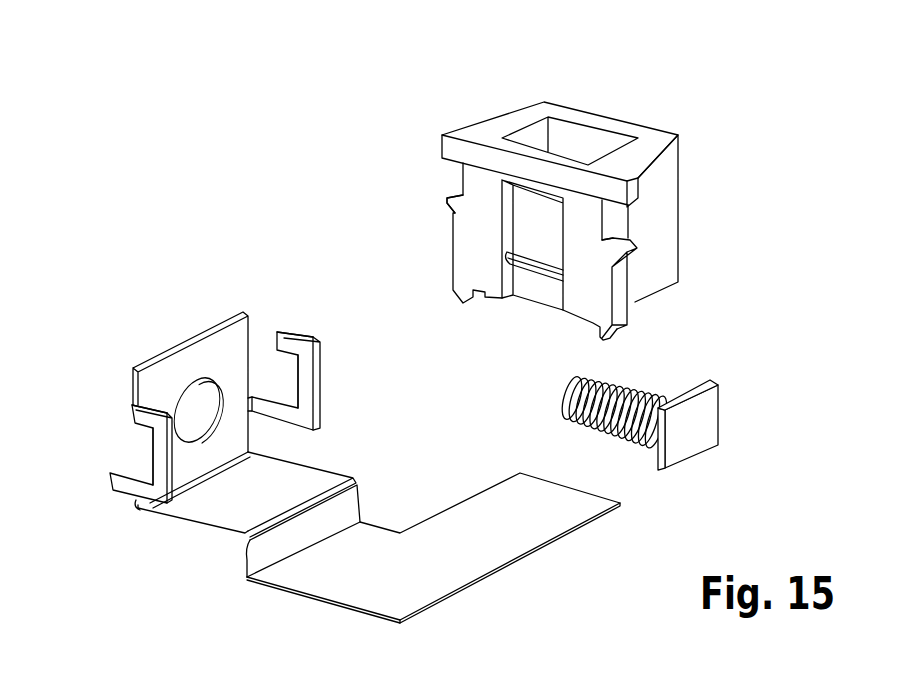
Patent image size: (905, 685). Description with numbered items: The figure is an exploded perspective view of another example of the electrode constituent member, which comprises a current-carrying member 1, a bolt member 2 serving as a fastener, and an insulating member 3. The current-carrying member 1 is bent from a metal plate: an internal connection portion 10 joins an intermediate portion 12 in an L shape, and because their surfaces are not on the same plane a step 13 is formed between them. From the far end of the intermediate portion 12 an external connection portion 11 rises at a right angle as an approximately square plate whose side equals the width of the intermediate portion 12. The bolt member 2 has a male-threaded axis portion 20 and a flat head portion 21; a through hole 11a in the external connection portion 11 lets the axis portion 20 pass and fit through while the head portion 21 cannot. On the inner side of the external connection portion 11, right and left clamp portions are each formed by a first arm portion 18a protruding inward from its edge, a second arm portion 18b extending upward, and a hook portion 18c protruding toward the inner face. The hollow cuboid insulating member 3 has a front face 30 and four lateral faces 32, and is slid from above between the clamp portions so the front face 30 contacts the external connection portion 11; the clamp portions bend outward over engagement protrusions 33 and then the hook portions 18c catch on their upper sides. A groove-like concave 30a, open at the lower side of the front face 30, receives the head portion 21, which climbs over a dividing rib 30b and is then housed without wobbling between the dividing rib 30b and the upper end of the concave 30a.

The current-carrying member 1 is at (338, 447).
The internal connection portion 10 is at (528, 530).
The external connection portion 11 is at (181, 378).
The through hole 11a is at (192, 397).
The intermediate portion 12 is at (220, 502).
The step 13 is at (290, 545).
The first arm portions 18a is at (127, 492).
The second arm portions 18b is at (160, 455).
The hook portions 18c is at (130, 415).
The bolt member 2 is at (626, 423).
The axis portion 20 is at (622, 380).
The head portion 21 is at (688, 432).
The insulating member 3 is at (565, 194).
The front face 30 is at (485, 175).
The groove-like concave 30a is at (535, 213).
The dividing rib 30b is at (535, 258).
The lateral faces 32 is at (537, 110).
The engagement protrusions 33 is at (447, 203).